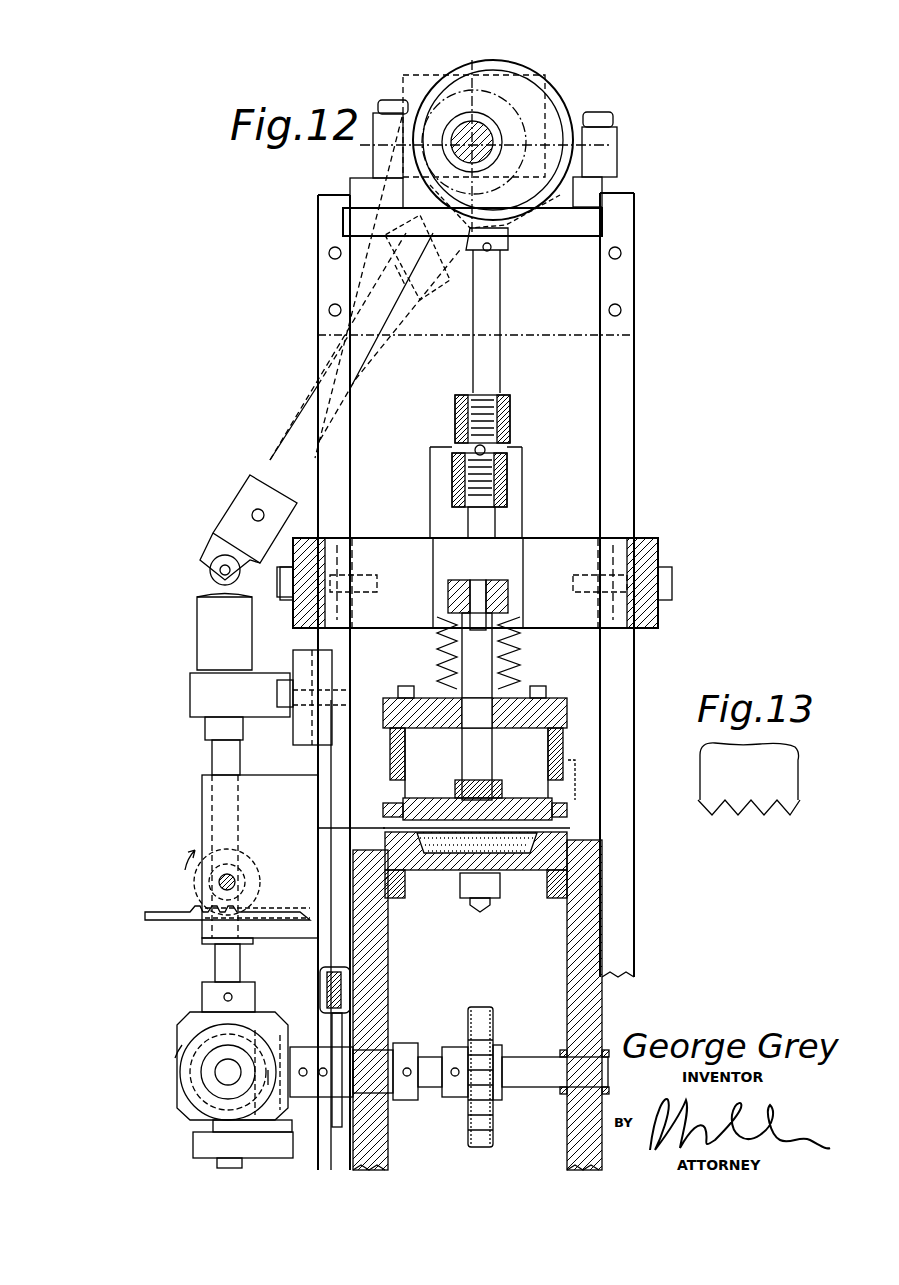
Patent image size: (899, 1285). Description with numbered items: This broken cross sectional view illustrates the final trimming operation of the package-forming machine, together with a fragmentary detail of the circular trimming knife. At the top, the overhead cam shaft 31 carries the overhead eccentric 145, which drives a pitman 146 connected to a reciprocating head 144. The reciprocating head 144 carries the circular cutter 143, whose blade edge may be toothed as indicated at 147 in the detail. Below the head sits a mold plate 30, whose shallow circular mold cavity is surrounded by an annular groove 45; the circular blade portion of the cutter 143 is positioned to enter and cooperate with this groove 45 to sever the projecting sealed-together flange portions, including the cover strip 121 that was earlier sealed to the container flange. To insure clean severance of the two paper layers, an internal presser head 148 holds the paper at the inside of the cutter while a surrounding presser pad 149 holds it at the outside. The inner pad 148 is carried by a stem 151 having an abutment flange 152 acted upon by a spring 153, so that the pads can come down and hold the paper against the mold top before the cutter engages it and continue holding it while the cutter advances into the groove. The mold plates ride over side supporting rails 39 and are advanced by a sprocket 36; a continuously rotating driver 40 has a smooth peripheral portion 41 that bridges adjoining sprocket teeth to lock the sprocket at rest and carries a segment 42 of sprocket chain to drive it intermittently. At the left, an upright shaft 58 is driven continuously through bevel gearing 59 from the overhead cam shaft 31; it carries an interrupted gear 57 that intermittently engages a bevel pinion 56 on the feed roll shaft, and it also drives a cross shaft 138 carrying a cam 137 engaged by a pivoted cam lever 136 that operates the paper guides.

In FIG. 12, the overhead cam shaft 31 is at (476, 124).
In FIG. 12, the overhead eccentric 145 is at (552, 125).
In FIG. 12, the bevel gearing 59 is at (495, 217).
In FIG. 12, the pitman 146 is at (492, 378).
In FIG. 12, the spring 153 is at (440, 632).
In FIG. 12, the abutment flange 152 is at (520, 690).
In FIG. 12, the reciprocating head 144 is at (560, 700).
In FIG. 12, the internal presser head 148 is at (438, 798).
In FIG. 12, the stem 151 is at (493, 763).
In FIG. 12, the circular cutter 143 is at (555, 790).
In FIG. 13, the circular cutter 143 is at (706, 778).
In FIG. 12, the surrounding presser pad 149 is at (567, 811).
In FIG. 12, the cover strip 121 is at (385, 826).
In FIG. 12, the annular groove 45 is at (567, 837).
In FIG. 12, the mold plate 30 is at (420, 870).
In FIG. 12, the sprocket 36 is at (479, 906).
In FIG. 12, the side supporting rails 39 is at (555, 885).
In FIG. 12, the upright shaft 58 is at (225, 752).
In FIG. 12, the bevel pinion 56 is at (207, 865).
In FIG. 12, the interrupted gear 57 is at (150, 910).
In FIG. 12, the cam lever 136 is at (320, 968).
In FIG. 12, the cam 137 is at (342, 1035).
In FIG. 12, the cross shaft 138 is at (430, 1088).
In FIG. 12, the peripheral portion 41 is at (482, 1012).
In FIG. 12, the driver 40 is at (498, 1046).
In FIG. 12, the segment of sprocket chain 42 is at (493, 1135).
In FIG. 13, the toothed edge 147 is at (757, 815).